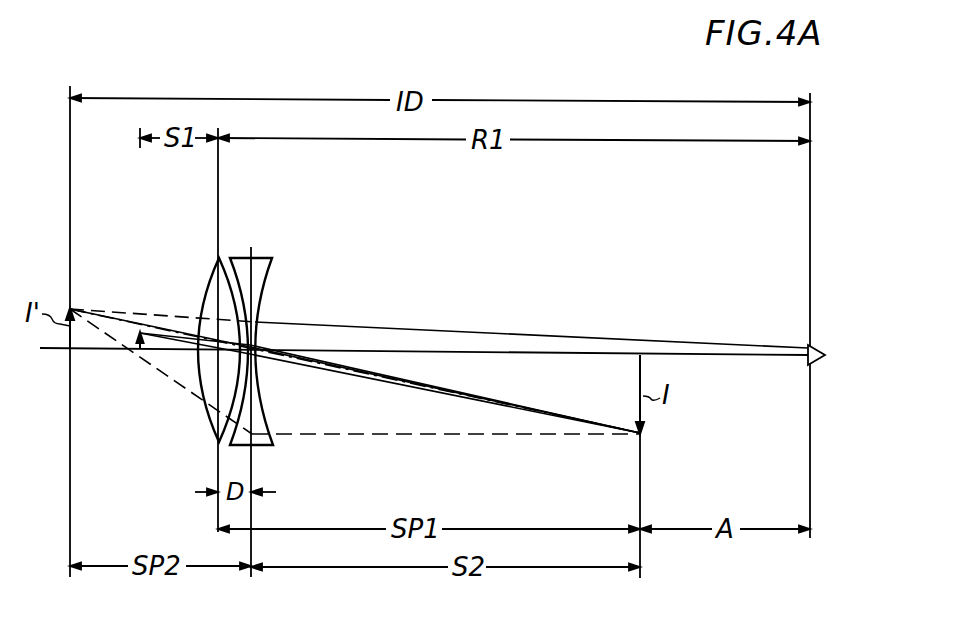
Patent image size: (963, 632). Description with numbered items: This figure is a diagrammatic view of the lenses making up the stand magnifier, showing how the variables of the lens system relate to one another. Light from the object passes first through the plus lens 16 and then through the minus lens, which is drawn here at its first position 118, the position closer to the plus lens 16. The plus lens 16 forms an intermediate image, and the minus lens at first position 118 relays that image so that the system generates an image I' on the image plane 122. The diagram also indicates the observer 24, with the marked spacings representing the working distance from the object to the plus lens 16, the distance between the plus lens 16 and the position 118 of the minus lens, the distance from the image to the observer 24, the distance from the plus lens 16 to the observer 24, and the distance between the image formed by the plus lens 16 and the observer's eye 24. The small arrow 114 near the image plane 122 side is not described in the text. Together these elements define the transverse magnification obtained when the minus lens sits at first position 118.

The plus lens 16 is at (221, 258).
The first position of minus lens 118 is at (264, 279).
The object arrow 114 is at (147, 344).
The image plane 122 is at (70, 459).
The observer 24 is at (816, 347).